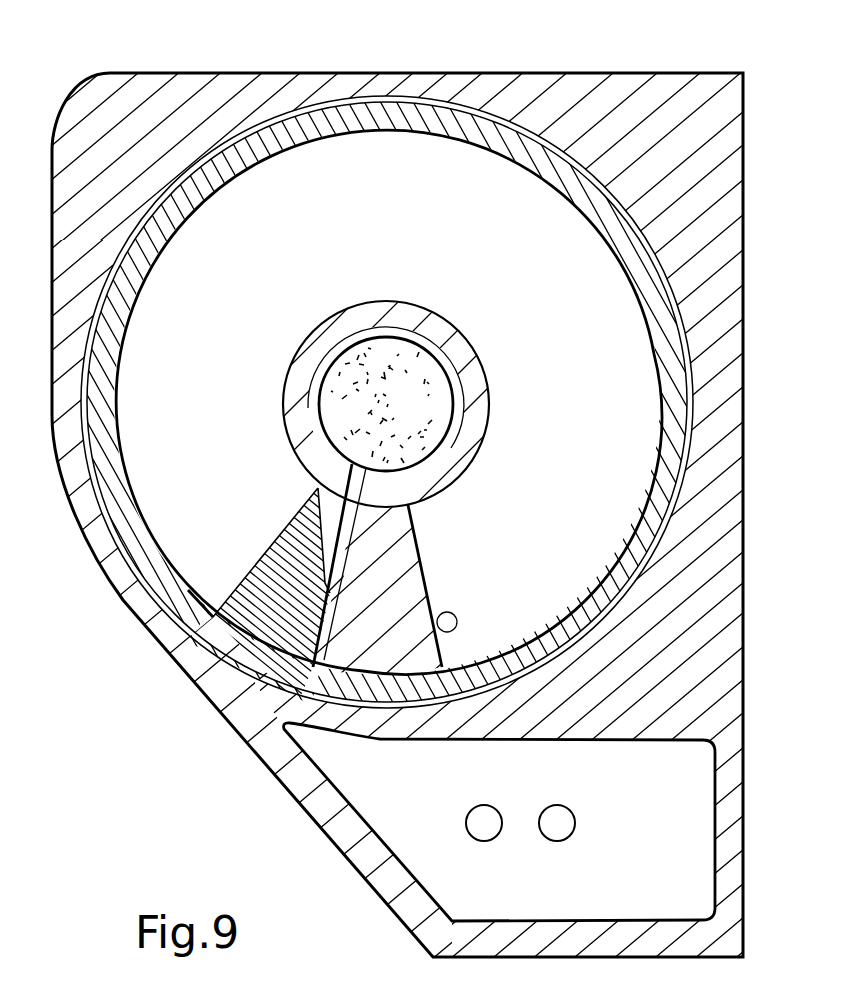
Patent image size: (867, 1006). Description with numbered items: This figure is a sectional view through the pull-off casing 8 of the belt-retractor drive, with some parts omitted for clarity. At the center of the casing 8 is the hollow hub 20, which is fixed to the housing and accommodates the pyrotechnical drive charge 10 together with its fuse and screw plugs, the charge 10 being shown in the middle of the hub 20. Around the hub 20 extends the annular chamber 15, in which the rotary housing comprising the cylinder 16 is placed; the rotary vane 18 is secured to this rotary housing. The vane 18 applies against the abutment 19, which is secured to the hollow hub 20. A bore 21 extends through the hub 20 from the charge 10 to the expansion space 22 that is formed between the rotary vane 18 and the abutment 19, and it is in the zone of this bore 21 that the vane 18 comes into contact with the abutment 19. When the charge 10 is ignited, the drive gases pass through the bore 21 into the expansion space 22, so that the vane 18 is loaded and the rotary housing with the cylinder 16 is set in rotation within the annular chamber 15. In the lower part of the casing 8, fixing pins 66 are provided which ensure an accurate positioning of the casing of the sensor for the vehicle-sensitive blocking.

The casing 8 is at (186, 88).
The pyrotechnical drive charge 10 is at (372, 368).
The annular chamber 15 is at (500, 198).
The cylinder 16 is at (302, 128).
The rotary vane 18 is at (288, 606).
The abutment 19 is at (358, 641).
The hollow hub 20 is at (438, 330).
The bore 21 is at (357, 477).
The expansion space 22 is at (340, 552).
The fixing pins 66 is at (556, 815).